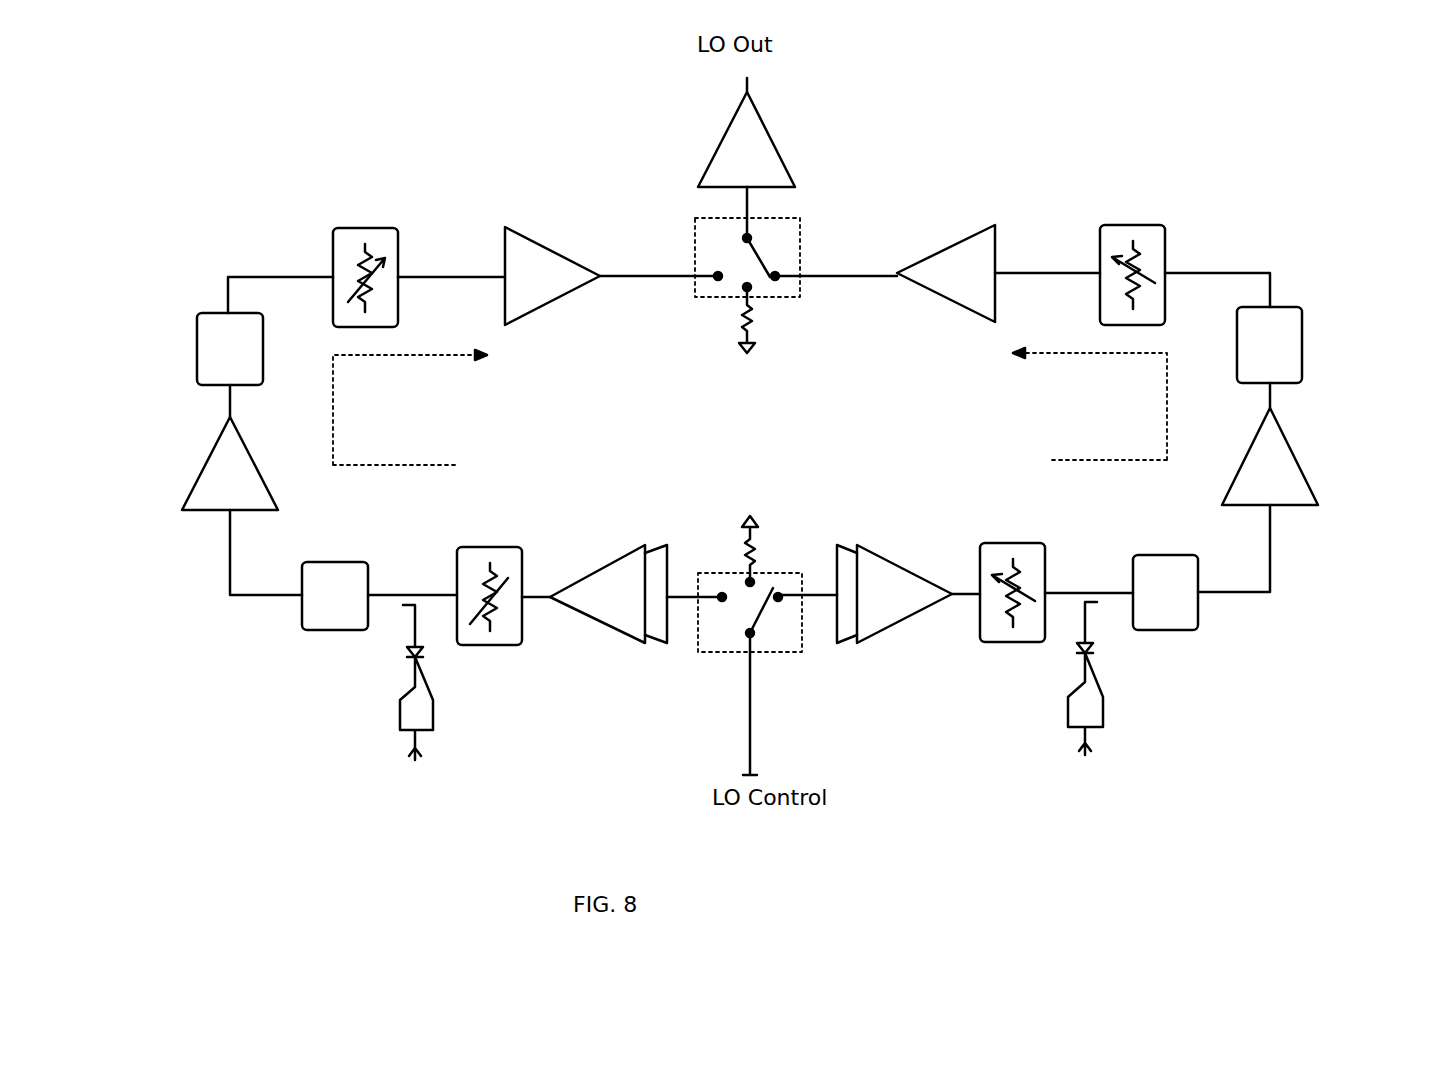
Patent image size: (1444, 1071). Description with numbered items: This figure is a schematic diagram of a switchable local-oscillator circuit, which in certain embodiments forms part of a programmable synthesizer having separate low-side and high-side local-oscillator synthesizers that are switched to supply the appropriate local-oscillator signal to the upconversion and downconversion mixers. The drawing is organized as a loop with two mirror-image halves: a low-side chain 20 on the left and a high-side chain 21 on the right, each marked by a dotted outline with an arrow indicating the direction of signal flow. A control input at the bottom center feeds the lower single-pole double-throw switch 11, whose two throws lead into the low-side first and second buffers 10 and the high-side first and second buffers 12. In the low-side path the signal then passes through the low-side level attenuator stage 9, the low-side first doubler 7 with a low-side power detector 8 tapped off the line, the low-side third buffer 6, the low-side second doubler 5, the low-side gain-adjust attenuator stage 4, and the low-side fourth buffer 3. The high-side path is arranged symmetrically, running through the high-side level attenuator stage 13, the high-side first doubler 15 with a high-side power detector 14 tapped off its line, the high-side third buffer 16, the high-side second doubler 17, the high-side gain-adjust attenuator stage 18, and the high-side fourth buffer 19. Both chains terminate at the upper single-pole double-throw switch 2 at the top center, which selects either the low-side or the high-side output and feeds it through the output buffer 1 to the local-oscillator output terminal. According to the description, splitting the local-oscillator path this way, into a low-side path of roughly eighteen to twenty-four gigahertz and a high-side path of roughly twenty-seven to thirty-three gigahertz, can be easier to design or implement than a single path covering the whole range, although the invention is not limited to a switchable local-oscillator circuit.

The LO BUF 1 is at (783, 132).
The LO SPDT 2 is at (791, 270).
The LS LO BUF4 3 is at (552, 251).
The LS LO GADJ VCA 4 is at (365, 252).
The LS LO DOUBLER2 5 is at (181, 320).
The LS LO BUF3 6 is at (196, 463).
The LS LO DOUBLER1 7 is at (335, 570).
The LS LO PDET 8 is at (374, 688).
The LS LO LVL VCA 9 is at (490, 569).
The LS LO BUF1/2 10 is at (627, 576).
The LO SPDT 11 is at (786, 607).
The HS LO BUF1/2 12 is at (867, 576).
The HS LO LVL VCA 13 is at (1013, 567).
The HS LO PDET 14 is at (1127, 685).
The HS LO DOUBLER1 15 is at (1165, 569).
The HS LO BUF3 16 is at (1305, 456).
The HS LO DOUBLER2 17 is at (1334, 345).
The HS LO GADJ VCA 18 is at (1133, 251).
The HS LO BUF4 19 is at (946, 249).
The LS Chain 20 is at (410, 407).
The HS Chain 21 is at (1090, 404).